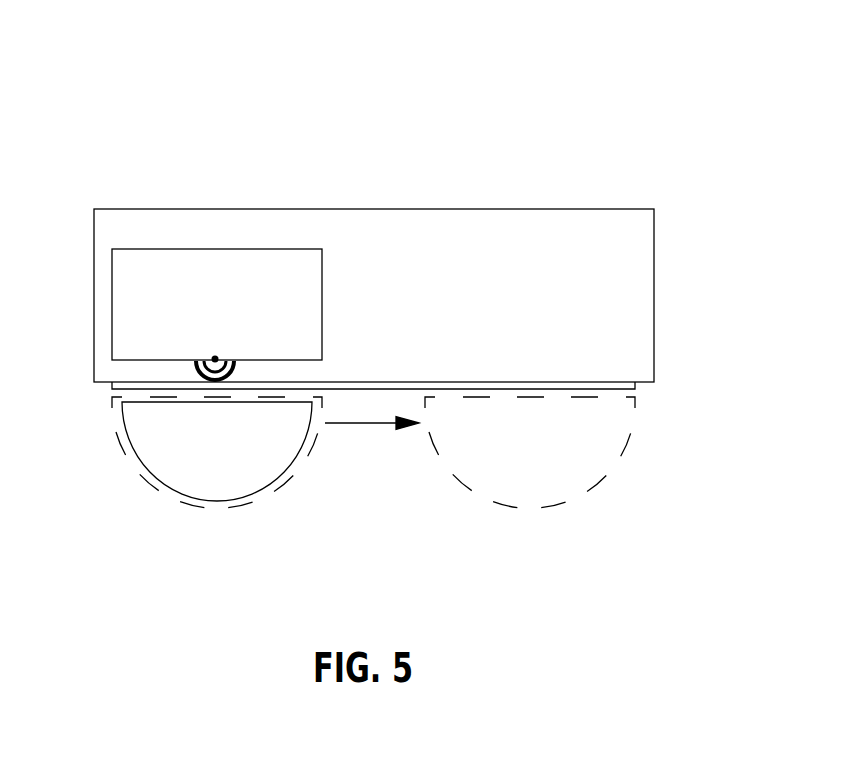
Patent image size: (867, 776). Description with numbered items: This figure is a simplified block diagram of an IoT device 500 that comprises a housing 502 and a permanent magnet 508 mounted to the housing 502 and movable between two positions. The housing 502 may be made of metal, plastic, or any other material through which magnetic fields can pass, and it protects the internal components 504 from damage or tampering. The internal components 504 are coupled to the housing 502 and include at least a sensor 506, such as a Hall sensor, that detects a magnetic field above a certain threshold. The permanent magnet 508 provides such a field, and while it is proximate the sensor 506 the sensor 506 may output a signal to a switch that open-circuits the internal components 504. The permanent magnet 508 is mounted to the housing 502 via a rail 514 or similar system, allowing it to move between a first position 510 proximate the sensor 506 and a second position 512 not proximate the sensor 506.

The IoT device 500 is at (652, 70).
The housing 502 is at (353, 256).
The internal components 504 is at (112, 292).
The sensor 506 is at (196, 366).
The permanent magnet 508 is at (167, 490).
The first position 510 is at (240, 505).
The second position 512 is at (553, 505).
The rail 514 is at (638, 387).